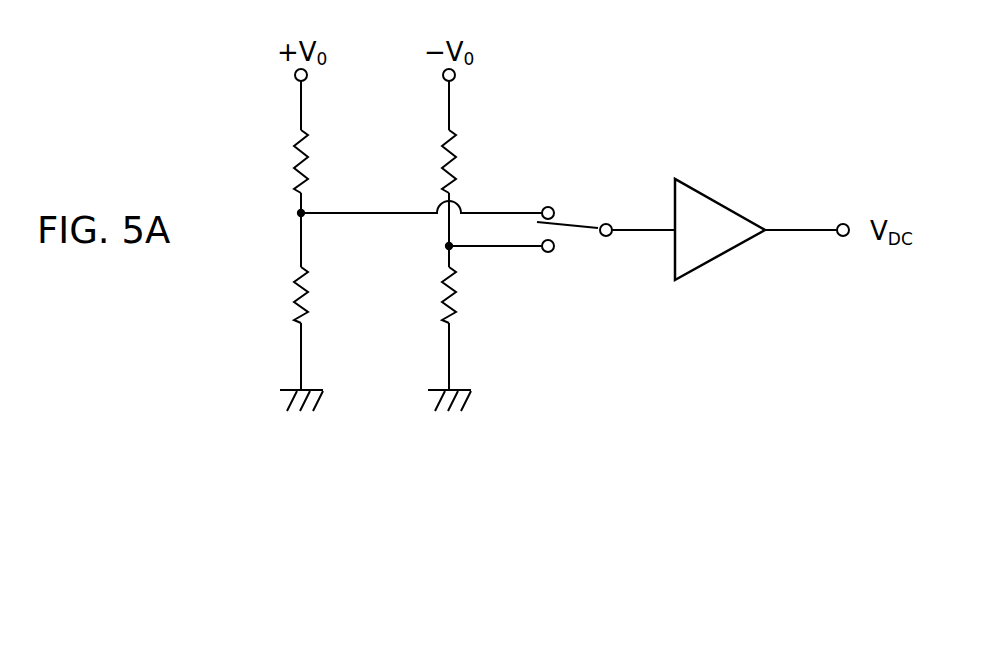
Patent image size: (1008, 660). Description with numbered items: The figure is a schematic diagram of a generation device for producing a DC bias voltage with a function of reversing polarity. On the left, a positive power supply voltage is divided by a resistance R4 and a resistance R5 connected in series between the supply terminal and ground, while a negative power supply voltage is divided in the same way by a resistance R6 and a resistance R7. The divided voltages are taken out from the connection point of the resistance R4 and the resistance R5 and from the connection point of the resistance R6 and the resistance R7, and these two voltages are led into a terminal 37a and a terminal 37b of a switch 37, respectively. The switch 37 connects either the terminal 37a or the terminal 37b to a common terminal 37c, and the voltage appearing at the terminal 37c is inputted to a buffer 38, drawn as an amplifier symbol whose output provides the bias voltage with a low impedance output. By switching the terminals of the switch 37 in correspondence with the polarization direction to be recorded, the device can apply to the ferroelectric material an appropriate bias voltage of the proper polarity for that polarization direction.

The resistance R4 is at (290, 160).
The resistance R5 is at (292, 292).
The resistance R6 is at (438, 160).
The resistance R7 is at (438, 292).
The switch 37 is at (582, 216).
The terminal 37a is at (548, 207).
The terminal 37b is at (548, 253).
The terminal 37c is at (606, 237).
The buffer 38 is at (698, 190).